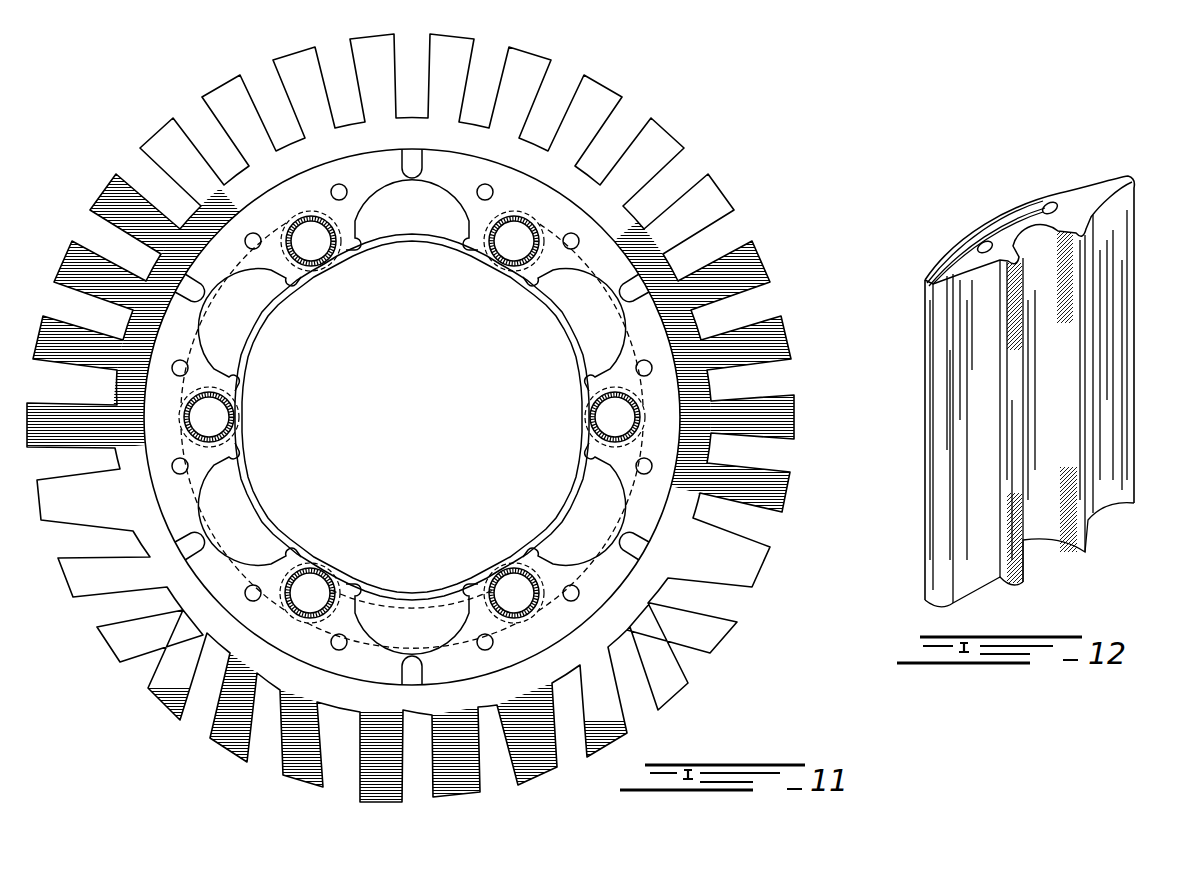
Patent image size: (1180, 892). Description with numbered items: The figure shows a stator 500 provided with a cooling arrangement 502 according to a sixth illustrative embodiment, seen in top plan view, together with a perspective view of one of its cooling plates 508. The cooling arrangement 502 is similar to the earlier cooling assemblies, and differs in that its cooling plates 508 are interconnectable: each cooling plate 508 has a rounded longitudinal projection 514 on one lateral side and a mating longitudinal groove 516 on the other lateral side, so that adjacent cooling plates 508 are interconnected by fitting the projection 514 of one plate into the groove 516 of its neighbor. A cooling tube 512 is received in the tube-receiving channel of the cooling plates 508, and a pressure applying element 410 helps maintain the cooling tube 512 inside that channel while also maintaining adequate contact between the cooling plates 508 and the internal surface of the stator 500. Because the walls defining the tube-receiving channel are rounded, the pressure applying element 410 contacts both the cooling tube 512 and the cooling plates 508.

In FIG. 11, the stator 500 is at (148, 129).
In FIG. 11, the cooling plate 508 is at (553, 205).
In FIG. 12, the cooling plate 508 is at (1023, 210).
In FIG. 11, the pressure applying element 410 is at (413, 238).
In FIG. 11, the cooling arrangement 502 is at (490, 271).
In FIG. 11, the cooling tube 512 is at (313, 268).
In FIG. 12, the rounded longitudinal projection 514 is at (1128, 173).
In FIG. 12, the longitudinal groove 516 is at (933, 300).